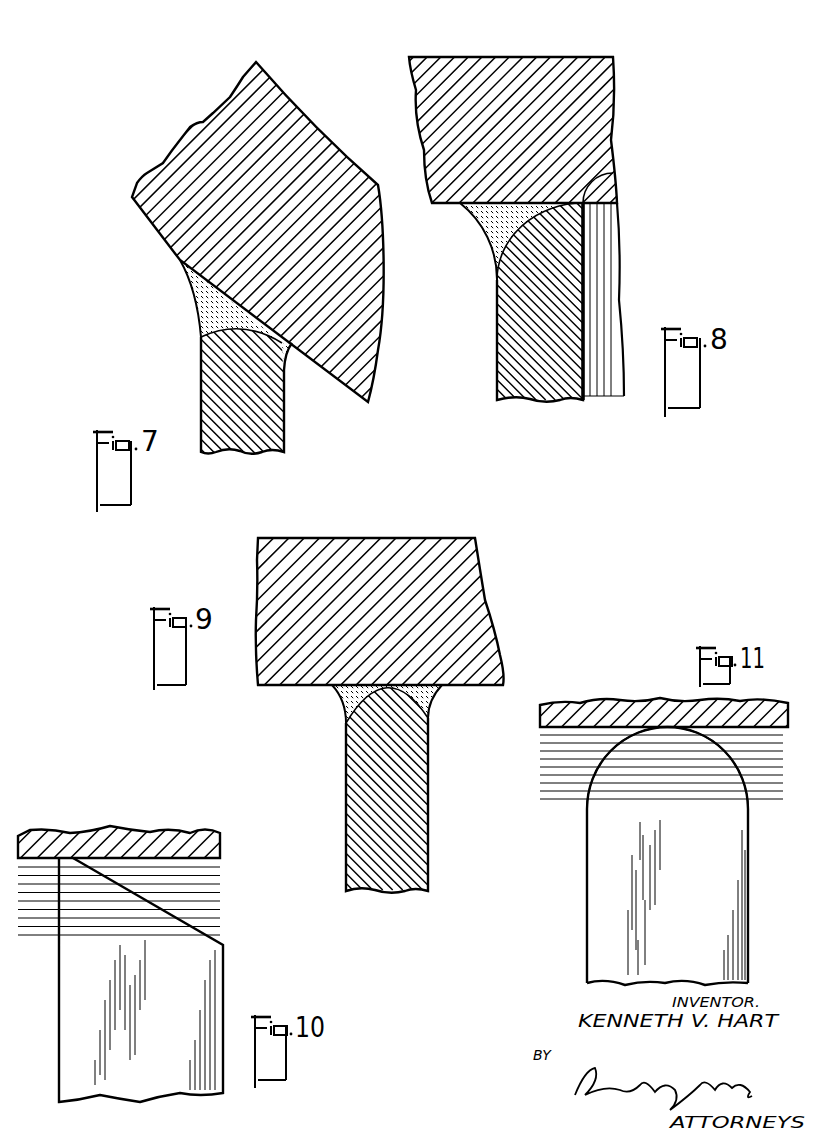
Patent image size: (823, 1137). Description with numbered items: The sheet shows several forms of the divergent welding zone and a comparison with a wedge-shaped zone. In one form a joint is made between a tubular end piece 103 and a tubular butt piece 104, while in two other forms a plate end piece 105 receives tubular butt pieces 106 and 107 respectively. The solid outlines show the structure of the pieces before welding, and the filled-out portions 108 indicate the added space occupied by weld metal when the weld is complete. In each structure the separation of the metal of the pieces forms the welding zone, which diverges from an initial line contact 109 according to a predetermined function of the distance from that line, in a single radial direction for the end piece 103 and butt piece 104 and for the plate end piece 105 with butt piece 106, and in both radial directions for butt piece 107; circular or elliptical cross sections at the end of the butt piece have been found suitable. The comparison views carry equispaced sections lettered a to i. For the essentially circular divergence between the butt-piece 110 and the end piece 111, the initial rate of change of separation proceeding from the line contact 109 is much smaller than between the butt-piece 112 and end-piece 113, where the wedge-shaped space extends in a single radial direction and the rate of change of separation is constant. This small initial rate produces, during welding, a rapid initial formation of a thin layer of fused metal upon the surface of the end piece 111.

In FIG. 7, the tubular end piece 103 is at (172, 207).
In FIG. 7, the tubular butt piece 104 is at (272, 422).
In FIG. 8, the plate end piece 105 is at (552, 70).
In FIG. 9, the plate end piece 105 is at (368, 555).
In FIG. 8, the tubular butt piece 106 is at (503, 340).
In FIG. 9, the tubular butt piece 107 is at (355, 788).
In FIG. 7, the filled-out portions 108 is at (200, 308).
In FIG. 8, the filled-out portions 108 is at (480, 223).
In FIG. 9, the filled-out portions 108 is at (338, 697).
In FIG. 7, the initial line contact 109 is at (225, 352).
In FIG. 8, the initial line contact 109 is at (615, 172).
In FIG. 9, the initial line contact 109 is at (347, 725).
In FIG. 10, the initial line contact 109 is at (59, 858).
In FIG. 11, the initial line contact 109 is at (666, 727).
In FIG. 11, the butt-piece 110 is at (602, 887).
In FIG. 11, the end piece 111 is at (596, 700).
In FIG. 10, the butt-piece 112 is at (212, 977).
In FIG. 10, the end-piece 113 is at (138, 848).